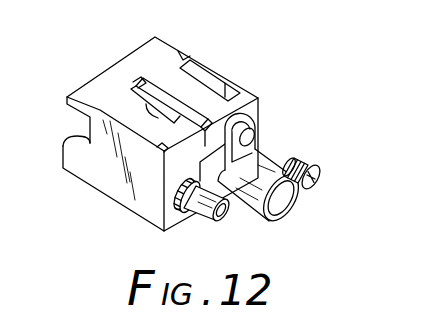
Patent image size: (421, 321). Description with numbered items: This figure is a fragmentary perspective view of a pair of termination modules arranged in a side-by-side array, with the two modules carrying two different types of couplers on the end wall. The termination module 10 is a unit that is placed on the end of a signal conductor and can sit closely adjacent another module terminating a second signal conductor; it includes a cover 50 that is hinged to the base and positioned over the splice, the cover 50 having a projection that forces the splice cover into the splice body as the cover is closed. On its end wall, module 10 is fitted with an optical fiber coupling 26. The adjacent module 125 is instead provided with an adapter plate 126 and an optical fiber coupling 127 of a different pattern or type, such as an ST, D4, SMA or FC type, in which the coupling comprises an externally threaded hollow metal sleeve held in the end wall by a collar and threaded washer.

The termination module 10 is at (246, 76).
The cover 50 is at (145, 78).
The module 125 is at (104, 195).
The adapter plate 126 is at (176, 174).
The optical fiber coupling 127 is at (201, 218).
The optical fiber coupling 26 is at (268, 162).